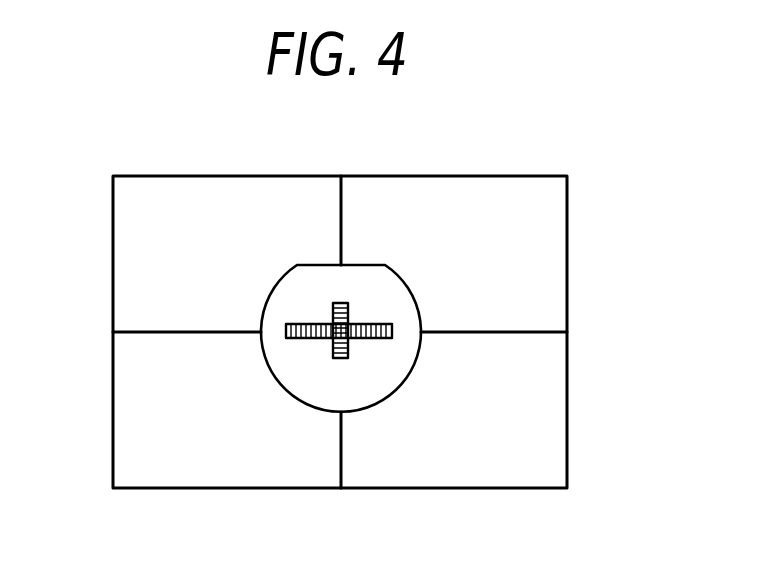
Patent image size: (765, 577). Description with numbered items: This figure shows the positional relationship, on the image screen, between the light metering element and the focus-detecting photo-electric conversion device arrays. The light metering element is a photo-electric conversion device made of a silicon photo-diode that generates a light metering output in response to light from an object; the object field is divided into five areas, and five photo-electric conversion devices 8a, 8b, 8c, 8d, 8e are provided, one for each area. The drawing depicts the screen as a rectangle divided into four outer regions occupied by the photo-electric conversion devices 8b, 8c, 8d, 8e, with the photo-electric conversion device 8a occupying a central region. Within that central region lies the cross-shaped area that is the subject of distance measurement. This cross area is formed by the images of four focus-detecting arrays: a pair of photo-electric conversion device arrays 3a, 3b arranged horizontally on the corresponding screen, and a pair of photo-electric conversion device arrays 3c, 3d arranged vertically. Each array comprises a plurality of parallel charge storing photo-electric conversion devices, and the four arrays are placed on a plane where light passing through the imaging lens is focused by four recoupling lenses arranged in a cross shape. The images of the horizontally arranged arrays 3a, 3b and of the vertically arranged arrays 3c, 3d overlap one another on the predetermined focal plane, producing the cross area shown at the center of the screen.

The photo-electric conversion device array 3a is at (391, 236).
The photo-electric conversion device array 3b is at (373, 322).
The photo-electric conversion device array 3c is at (305, 246).
The photo-electric conversion device array 3d is at (333, 312).
The photo-electric conversion device 8a is at (373, 392).
The photo-electric conversion device 8b is at (125, 260).
The photo-electric conversion device 8c is at (557, 213).
The photo-electric conversion device 8d is at (125, 418).
The photo-electric conversion device 8e is at (557, 428).